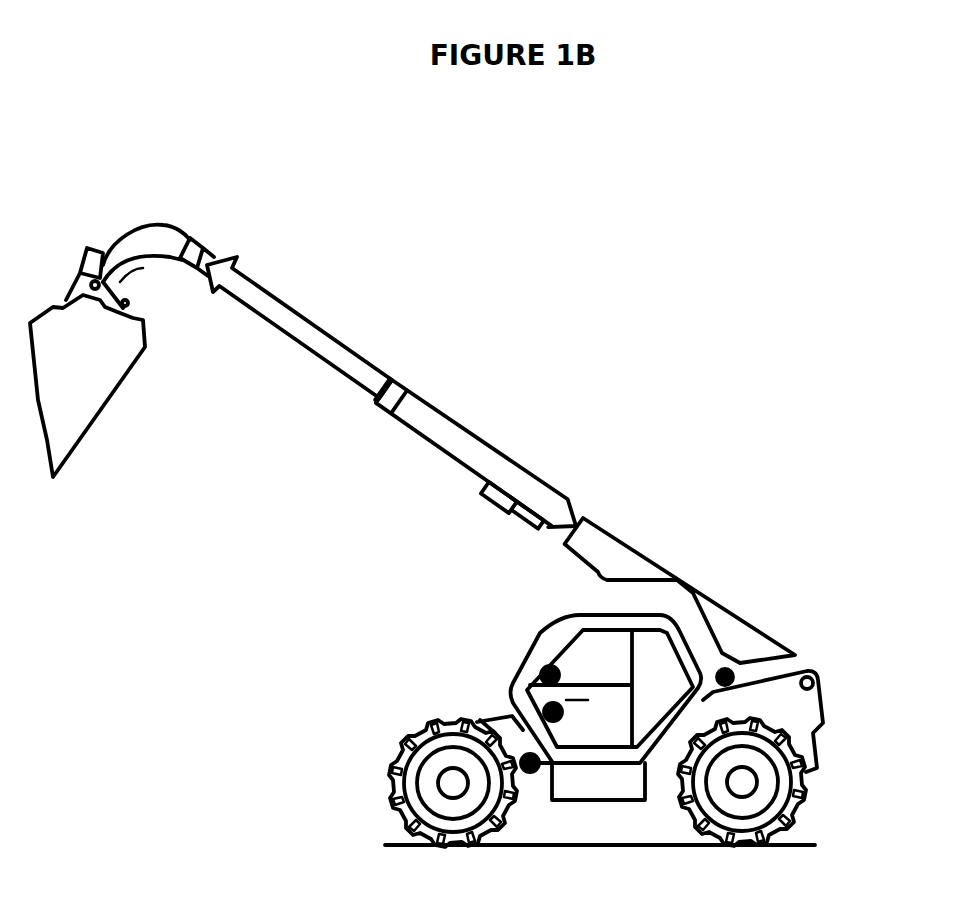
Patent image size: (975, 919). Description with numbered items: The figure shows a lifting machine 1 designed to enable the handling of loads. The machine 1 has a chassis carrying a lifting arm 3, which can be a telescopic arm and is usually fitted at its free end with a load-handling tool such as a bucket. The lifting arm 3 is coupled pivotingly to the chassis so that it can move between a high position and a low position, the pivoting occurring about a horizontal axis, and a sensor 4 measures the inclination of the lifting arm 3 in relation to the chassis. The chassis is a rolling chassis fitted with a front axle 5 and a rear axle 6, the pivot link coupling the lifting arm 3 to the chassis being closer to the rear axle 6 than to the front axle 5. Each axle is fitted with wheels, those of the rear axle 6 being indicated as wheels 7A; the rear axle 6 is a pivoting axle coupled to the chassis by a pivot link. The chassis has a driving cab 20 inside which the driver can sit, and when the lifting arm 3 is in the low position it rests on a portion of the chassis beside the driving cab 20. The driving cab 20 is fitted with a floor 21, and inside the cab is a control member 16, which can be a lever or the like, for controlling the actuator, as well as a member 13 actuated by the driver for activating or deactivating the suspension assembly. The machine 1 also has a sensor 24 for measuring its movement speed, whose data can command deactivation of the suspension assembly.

The lifting machine 1 is at (680, 510).
The lifting arm 3 is at (472, 441).
The sensor 4 is at (742, 662).
The front axle 5 is at (442, 787).
The rear axle 6 is at (746, 788).
The wheels 7A is at (813, 774).
The member for activating/deactivating the suspension assembly 13 is at (545, 669).
The control member 16 is at (545, 772).
The driving cab 20 is at (577, 705).
The floor 21 is at (645, 800).
The sensor 24 is at (480, 720).